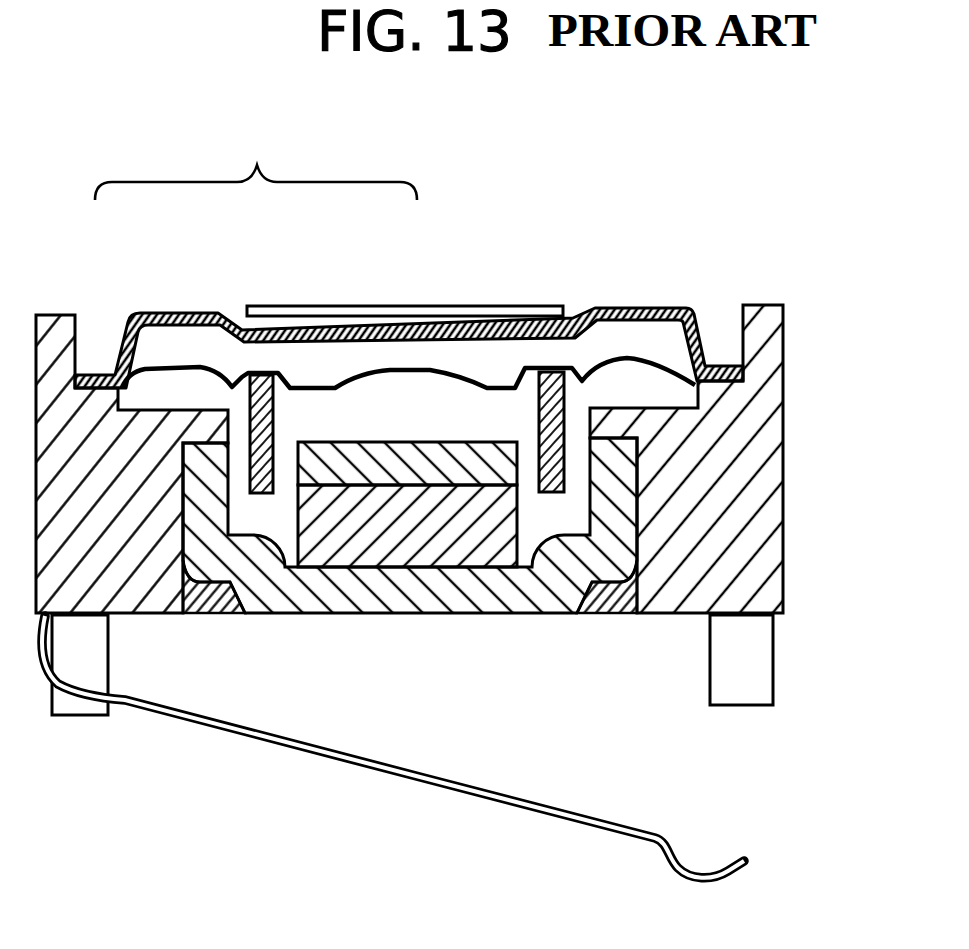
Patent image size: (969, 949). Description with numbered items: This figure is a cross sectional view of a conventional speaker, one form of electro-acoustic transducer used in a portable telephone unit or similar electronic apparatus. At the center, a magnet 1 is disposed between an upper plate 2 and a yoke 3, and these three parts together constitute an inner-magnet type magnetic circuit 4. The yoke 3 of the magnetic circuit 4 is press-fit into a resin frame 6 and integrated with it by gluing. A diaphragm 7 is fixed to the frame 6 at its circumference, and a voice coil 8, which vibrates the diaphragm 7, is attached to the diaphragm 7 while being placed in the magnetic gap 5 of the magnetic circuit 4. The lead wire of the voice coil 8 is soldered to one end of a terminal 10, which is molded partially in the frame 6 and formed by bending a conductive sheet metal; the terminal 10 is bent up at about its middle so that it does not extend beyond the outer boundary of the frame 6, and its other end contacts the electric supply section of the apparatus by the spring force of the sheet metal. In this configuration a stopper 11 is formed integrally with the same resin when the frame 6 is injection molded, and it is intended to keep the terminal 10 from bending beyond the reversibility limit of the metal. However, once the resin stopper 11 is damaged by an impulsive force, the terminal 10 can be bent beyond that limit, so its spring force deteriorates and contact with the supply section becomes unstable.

The magnet 1 is at (377, 512).
The upper plate 2 is at (450, 463).
The yoke 3 is at (209, 470).
The magnetic circuit 4 is at (409, 250).
The magnetic gap 5 is at (530, 472).
The frame 6 is at (750, 433).
The diaphragm 7 is at (632, 358).
The voice coil 8 is at (562, 372).
The terminal 10 is at (348, 763).
The stopper 11 is at (773, 653).